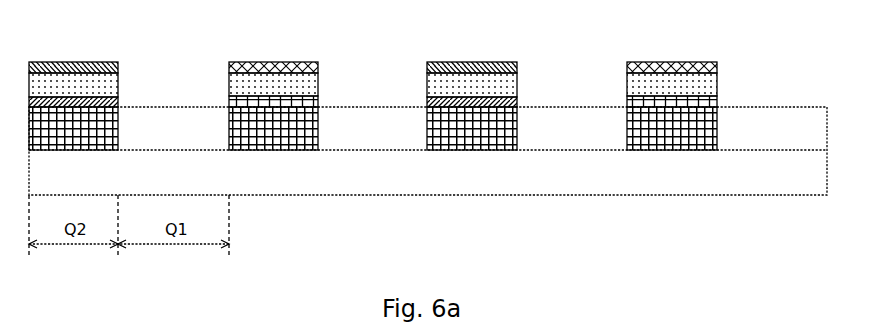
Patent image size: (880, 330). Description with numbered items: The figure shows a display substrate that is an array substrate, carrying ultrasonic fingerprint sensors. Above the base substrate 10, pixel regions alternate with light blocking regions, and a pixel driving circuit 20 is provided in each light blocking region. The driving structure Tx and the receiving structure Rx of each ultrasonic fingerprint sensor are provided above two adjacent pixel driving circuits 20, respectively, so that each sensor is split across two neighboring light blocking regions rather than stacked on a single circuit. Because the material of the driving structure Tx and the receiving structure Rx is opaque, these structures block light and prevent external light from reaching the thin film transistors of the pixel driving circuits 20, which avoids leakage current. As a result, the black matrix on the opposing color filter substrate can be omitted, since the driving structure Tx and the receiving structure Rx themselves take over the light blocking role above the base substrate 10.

The base substrate 10 is at (737, 180).
The pixel driving circuit 20 is at (104, 132).
The driving structure Tx is at (73, 62).
The receiving structure Rx is at (274, 62).